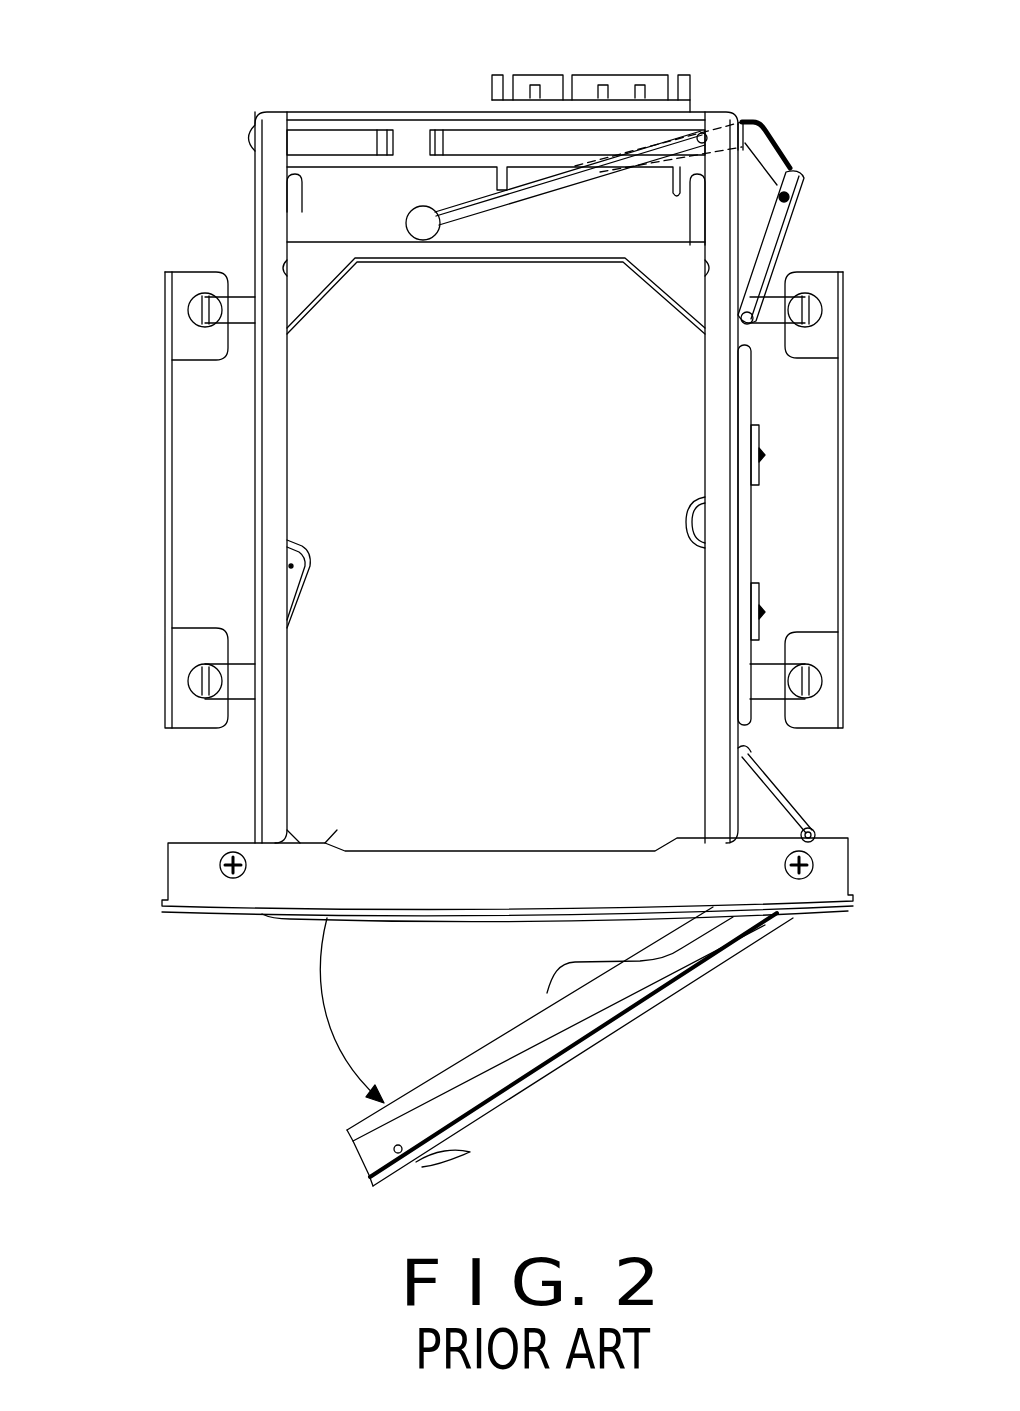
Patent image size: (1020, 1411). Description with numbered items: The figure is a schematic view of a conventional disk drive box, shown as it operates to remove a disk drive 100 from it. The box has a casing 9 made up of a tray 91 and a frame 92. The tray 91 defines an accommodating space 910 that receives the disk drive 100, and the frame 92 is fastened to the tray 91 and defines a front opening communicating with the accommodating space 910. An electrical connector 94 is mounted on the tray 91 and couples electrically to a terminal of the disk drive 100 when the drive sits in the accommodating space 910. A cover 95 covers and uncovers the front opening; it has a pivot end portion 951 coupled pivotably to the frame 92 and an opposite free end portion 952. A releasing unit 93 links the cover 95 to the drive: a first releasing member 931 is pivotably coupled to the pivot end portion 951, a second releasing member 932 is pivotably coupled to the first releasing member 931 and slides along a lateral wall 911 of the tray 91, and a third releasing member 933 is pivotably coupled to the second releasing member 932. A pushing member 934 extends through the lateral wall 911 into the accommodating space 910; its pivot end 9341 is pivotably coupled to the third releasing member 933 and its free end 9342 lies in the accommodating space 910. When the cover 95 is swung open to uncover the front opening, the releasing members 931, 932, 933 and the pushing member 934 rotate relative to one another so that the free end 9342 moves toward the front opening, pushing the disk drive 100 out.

The casing 9 is at (158, 493).
The accommodating space 910 is at (312, 447).
The lateral wall 911 is at (725, 398).
The tray 91 is at (255, 562).
The frame 92 is at (196, 843).
The releasing unit 93 is at (755, 549).
The first releasing member 931 is at (776, 808).
The second releasing member 932 is at (752, 508).
The third releasing member 933 is at (783, 232).
The pushing member 934 is at (760, 130).
The pivot end 9341 is at (800, 195).
The free end 9342 is at (420, 220).
The electrical connector 94 is at (636, 180).
The cover 95 is at (600, 1062).
The pivot end portion 951 is at (772, 925).
The free end portion 952 is at (400, 1178).
The disk drive 100 is at (325, 775).